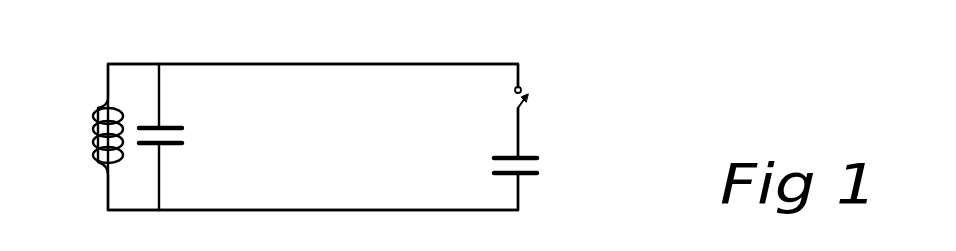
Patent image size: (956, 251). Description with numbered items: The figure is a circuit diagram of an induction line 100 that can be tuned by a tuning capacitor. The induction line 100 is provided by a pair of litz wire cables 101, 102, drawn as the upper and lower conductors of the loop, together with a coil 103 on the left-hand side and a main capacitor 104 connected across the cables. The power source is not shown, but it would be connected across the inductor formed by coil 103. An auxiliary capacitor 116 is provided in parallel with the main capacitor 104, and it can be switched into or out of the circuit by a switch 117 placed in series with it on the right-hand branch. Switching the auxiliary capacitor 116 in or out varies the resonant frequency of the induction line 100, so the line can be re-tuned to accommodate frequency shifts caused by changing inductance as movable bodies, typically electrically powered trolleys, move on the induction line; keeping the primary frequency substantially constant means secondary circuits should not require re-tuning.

The induction line 100 is at (697, 39).
The litz wire cable 101 is at (433, 64).
The litz wire cable 102 is at (410, 204).
The coil 103 is at (97, 163).
The main capacitor 104 is at (262, 113).
The auxiliary capacitor 116 is at (632, 163).
The switch 117 is at (602, 105).